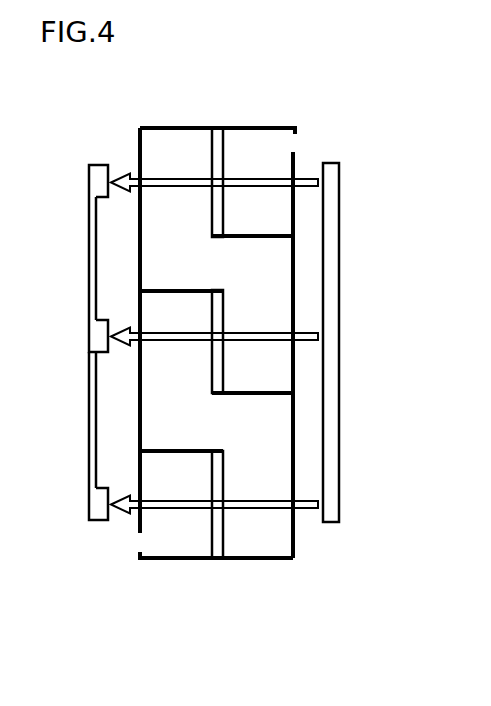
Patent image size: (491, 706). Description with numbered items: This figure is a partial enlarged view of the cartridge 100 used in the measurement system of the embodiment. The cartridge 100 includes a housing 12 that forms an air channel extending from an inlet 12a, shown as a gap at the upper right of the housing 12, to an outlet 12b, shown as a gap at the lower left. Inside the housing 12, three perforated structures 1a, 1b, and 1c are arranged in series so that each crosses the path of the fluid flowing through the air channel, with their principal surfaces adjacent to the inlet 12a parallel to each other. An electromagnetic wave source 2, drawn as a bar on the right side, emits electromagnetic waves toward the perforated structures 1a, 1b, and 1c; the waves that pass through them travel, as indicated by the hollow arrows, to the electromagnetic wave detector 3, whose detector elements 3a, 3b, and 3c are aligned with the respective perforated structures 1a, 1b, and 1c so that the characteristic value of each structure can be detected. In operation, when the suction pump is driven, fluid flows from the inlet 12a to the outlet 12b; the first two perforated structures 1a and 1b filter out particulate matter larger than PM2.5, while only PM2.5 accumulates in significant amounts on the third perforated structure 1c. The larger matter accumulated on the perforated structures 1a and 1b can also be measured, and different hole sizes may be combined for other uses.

The cartridge 100 is at (161, 117).
The housing 12 is at (297, 548).
The inlet 12a is at (293, 142).
The outlet 12b is at (137, 545).
The perforated structure 1a is at (215, 157).
The perforated structure 1b is at (217, 312).
The perforated structure 1c is at (217, 478).
The electromagnetic wave source 2 is at (330, 371).
The electromagnetic wave detector 3 is at (79, 272).
The electromagnetic wave detector 3a is at (89, 181).
The electromagnetic wave detector 3b is at (89, 337).
The electromagnetic wave detector 3c is at (89, 503).